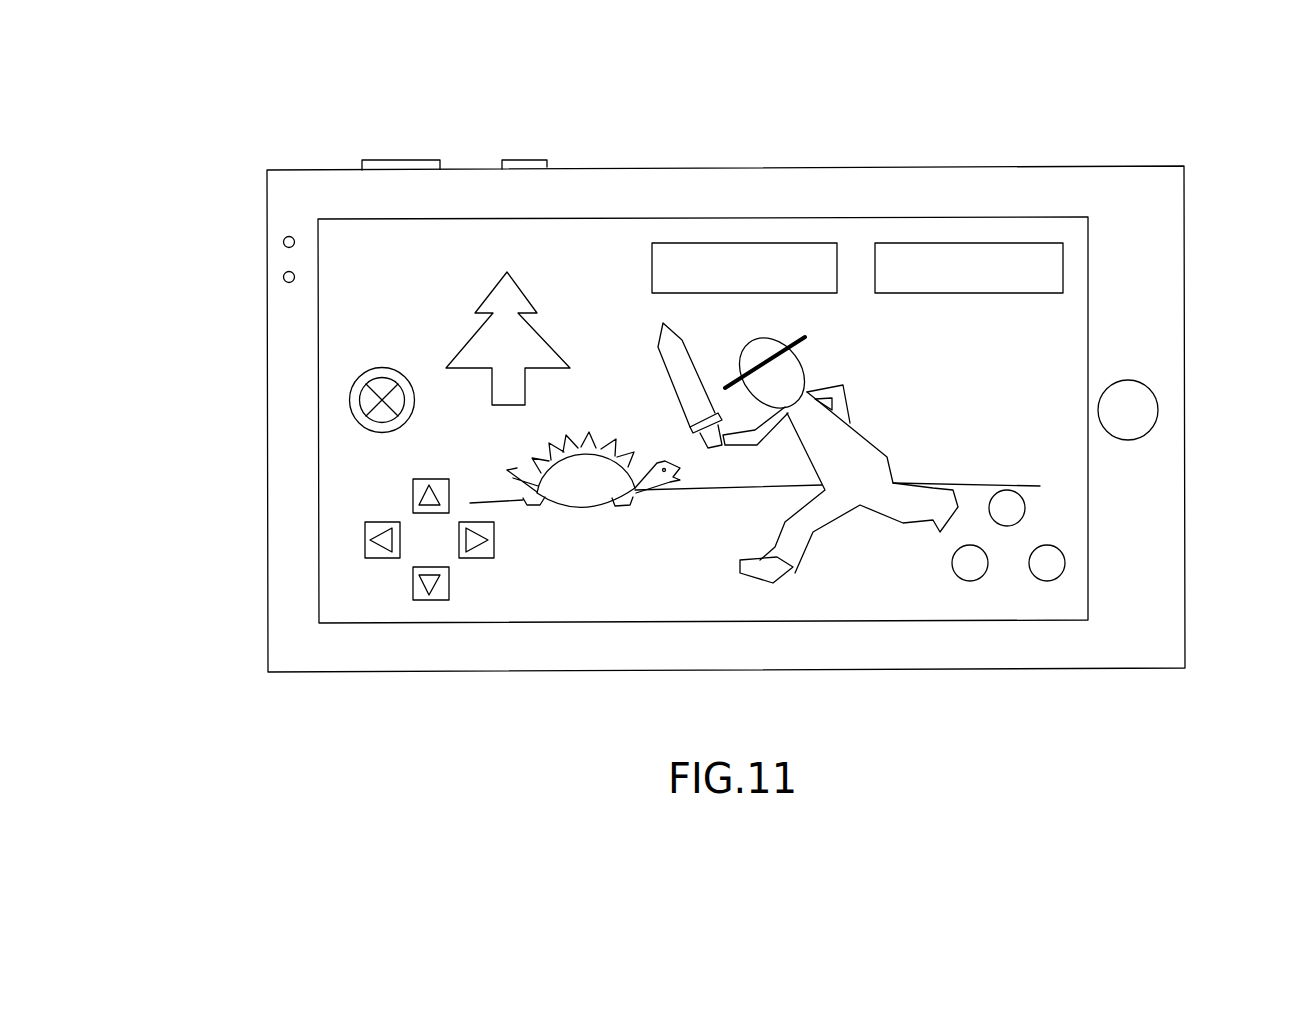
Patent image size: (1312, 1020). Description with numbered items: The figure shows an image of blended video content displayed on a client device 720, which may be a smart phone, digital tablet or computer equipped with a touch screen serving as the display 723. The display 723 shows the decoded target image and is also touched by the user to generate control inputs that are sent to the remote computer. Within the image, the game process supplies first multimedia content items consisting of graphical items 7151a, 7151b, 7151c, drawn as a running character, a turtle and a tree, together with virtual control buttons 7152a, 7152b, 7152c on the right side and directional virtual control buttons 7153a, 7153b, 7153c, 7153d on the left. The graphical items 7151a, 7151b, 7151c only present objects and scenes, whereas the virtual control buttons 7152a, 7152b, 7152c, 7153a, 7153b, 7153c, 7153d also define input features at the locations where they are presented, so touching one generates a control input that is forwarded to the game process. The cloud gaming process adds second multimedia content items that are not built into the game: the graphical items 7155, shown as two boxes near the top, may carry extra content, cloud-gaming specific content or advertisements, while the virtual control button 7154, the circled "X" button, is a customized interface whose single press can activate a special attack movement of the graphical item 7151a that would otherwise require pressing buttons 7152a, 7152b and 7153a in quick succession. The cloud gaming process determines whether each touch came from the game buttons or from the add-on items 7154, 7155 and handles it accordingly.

The client device 720 is at (985, 167).
The display 723 is at (1052, 218).
The graphical item 7151a is at (820, 448).
The graphical item 7151b is at (583, 493).
The graphical item 7151c is at (504, 293).
The virtual control button 7152a is at (1026, 507).
The virtual control button 7152b is at (1065, 562).
The virtual control button 7152c is at (978, 575).
The virtual control button 7153a is at (418, 493).
The virtual control button 7153b is at (483, 557).
The virtual control button 7153c is at (418, 592).
The virtual control button 7153d is at (368, 547).
The second multimedia content item 7154 is at (380, 402).
The second multimedia content item 7155 is at (727, 252).